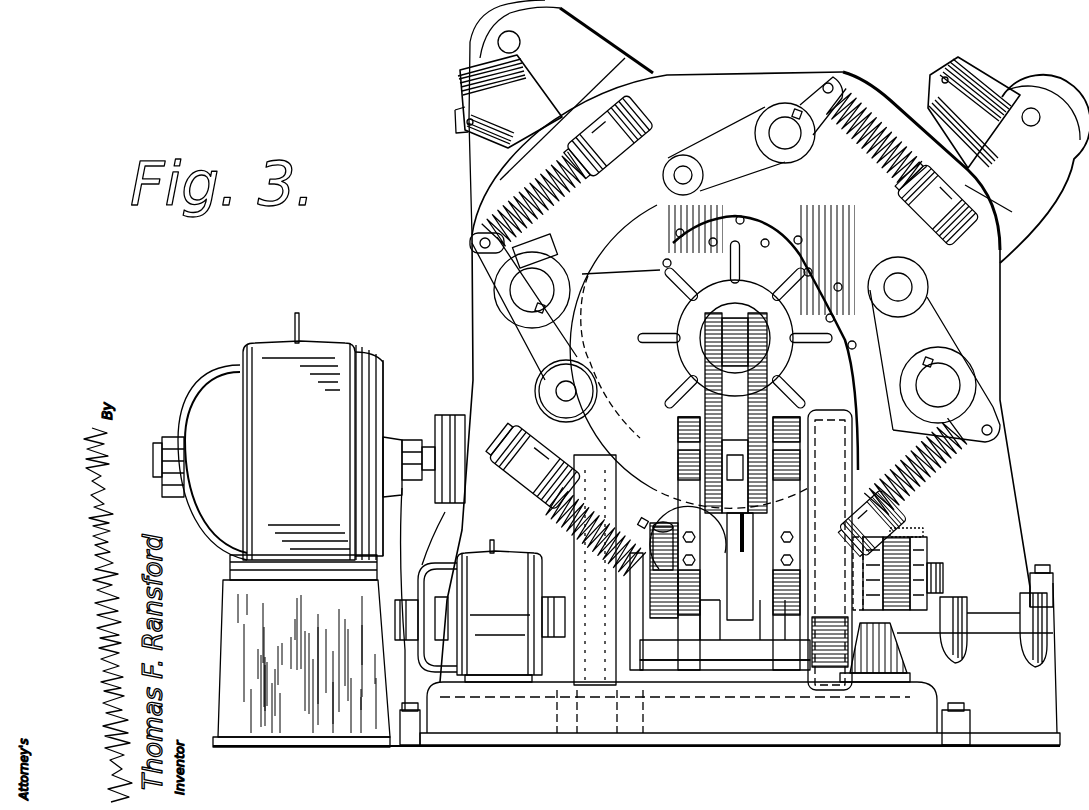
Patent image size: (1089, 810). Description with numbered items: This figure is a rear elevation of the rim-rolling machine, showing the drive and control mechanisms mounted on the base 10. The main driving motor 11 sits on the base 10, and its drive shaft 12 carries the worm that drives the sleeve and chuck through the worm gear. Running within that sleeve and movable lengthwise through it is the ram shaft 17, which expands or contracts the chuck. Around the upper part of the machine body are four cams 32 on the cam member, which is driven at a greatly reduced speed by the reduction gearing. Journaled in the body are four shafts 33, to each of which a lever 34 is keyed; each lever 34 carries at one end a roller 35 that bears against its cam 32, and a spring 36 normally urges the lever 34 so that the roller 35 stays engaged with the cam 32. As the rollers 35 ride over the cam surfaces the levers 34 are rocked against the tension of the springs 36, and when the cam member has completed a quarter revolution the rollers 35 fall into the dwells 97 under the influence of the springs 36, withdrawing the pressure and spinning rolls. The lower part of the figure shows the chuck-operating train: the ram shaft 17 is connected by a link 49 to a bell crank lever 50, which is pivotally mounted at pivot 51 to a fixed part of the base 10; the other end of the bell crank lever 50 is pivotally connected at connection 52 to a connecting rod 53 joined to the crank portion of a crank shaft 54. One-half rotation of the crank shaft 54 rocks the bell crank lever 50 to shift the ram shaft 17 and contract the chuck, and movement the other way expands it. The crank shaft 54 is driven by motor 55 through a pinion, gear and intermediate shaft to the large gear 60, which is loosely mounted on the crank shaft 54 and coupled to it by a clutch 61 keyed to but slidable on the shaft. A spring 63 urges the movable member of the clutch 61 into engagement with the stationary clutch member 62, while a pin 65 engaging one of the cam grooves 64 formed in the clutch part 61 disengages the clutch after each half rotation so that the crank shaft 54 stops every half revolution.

The base 10 is at (1042, 690).
The main driving motor 11 is at (271, 530).
The drive shaft 12 is at (412, 440).
The ram shaft 17 is at (703, 110).
The cams 32 is at (645, 210).
The shafts 33 is at (800, 143).
The lever 34 is at (723, 137).
The roller 35 is at (676, 155).
The spring 36 is at (878, 128).
The link 49 is at (700, 318).
The bell crank lever 50 is at (682, 370).
The pivot 51 is at (682, 430).
The pivotal connection 52 is at (682, 463).
The connecting rod 53 is at (700, 500).
The crank shaft 54 is at (712, 585).
The motor 55 is at (480, 611).
The large gear 60 is at (845, 436).
The clutch 61 is at (895, 537).
The stationary member of the clutch 62 is at (905, 557).
The spring 63 is at (905, 538).
The cam grooves 64 is at (943, 572).
The pin 65 is at (900, 617).
The dwells 97 is at (660, 227).